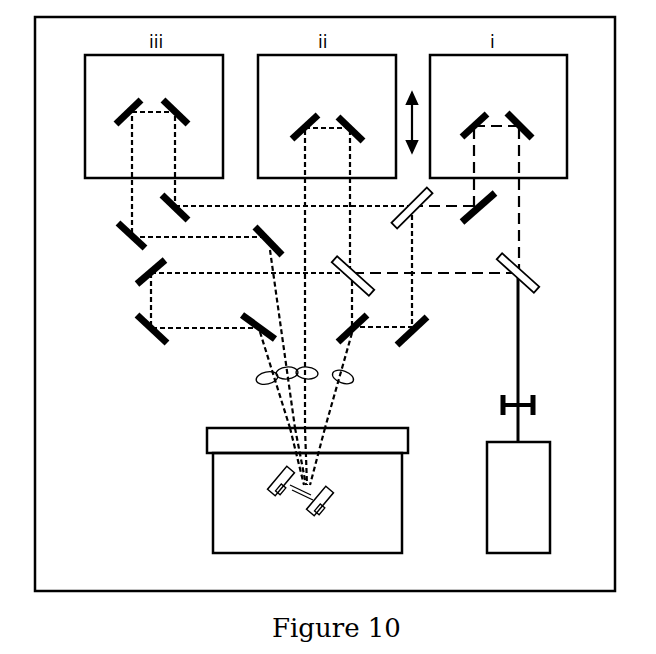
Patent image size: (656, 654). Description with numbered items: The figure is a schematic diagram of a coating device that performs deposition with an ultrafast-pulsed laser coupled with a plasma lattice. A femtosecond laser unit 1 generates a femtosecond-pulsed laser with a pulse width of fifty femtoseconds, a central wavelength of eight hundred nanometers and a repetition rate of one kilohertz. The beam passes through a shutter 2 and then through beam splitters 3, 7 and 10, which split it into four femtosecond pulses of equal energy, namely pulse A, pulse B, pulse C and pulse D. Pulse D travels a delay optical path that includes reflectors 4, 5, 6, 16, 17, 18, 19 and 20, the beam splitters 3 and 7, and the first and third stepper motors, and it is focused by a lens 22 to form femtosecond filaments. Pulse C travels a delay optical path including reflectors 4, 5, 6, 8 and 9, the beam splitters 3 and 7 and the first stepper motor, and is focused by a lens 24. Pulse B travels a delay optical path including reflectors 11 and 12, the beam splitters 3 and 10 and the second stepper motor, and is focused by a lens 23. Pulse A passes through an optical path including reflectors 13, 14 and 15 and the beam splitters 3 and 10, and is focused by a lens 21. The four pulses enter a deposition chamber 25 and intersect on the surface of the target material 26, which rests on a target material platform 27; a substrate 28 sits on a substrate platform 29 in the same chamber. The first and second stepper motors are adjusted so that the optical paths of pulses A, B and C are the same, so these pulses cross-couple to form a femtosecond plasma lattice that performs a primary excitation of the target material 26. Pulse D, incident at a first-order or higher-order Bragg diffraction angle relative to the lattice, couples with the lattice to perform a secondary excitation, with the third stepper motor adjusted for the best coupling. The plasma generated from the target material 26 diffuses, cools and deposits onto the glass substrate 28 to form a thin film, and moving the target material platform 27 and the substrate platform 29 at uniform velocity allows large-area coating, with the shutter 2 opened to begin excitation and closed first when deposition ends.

The femtosecond laser unit 1 is at (518, 497).
The shutter 2 is at (537, 402).
The beam splitter 3 is at (530, 271).
The reflector 4 is at (520, 116).
The reflector 5 is at (470, 117).
The reflector 6 is at (481, 212).
The beam splitter 7 is at (418, 211).
The reflector 8 is at (425, 331).
The reflector 9 is at (349, 324).
The beam splitter 10 is at (355, 270).
The reflector 11 is at (350, 118).
The reflector 12 is at (303, 118).
The reflector 13 is at (143, 275).
The reflector 14 is at (143, 330).
The reflector 15 is at (258, 323).
The reflector 16 is at (162, 204).
The reflector 17 is at (174, 104).
The reflector 18 is at (126, 106).
The reflector 19 is at (124, 237).
The reflector 20 is at (270, 238).
The lens 21 is at (258, 378).
The lens 22 is at (280, 382).
The lens 23 is at (306, 367).
The lens 24 is at (354, 373).
The deposition chamber 25 is at (402, 498).
The target material 26 is at (308, 513).
The target material platform 27 is at (330, 486).
The substrate 28 is at (279, 494).
The substrate platform 29 is at (272, 481).
The pulse A is at (288, 407).
The pulse B is at (307, 398).
The pulse C is at (332, 408).
The pulse D is at (283, 347).